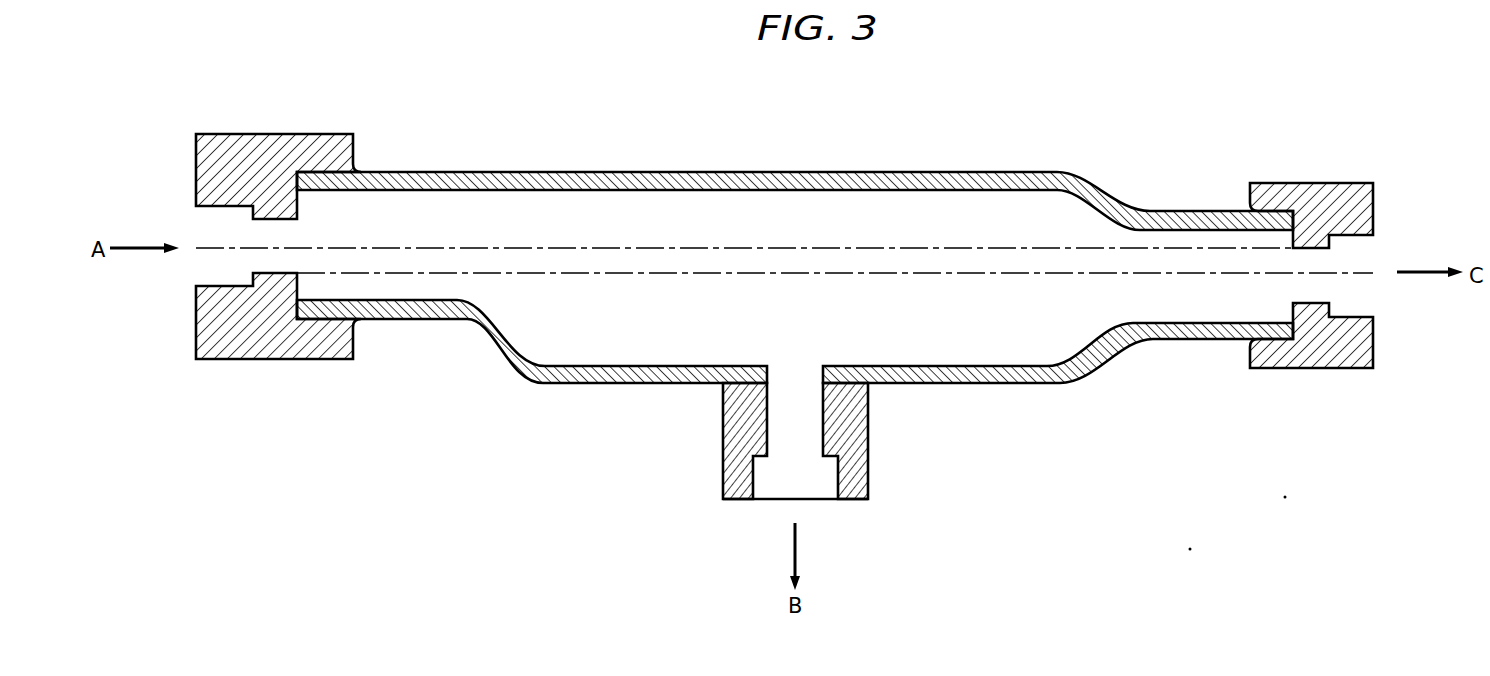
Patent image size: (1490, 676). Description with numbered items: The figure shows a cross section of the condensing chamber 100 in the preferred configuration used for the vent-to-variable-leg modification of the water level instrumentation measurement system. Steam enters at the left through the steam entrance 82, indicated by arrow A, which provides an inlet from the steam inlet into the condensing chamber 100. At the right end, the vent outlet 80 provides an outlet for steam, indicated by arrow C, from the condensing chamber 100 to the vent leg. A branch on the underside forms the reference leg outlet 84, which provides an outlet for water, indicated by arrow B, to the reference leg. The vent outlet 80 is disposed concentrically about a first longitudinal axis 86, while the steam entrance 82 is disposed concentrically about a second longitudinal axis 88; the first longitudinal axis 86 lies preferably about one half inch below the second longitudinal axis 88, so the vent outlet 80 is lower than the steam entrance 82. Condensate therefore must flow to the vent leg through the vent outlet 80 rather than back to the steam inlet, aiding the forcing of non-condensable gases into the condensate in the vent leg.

The condensing chamber 100 is at (720, 150).
The steam entrance 82 is at (204, 230).
The vent outlet 80 is at (1366, 245).
The reference leg outlet 84 is at (821, 494).
The first longitudinal axis 86 is at (1078, 274).
The second longitudinal axis 88 is at (775, 247).